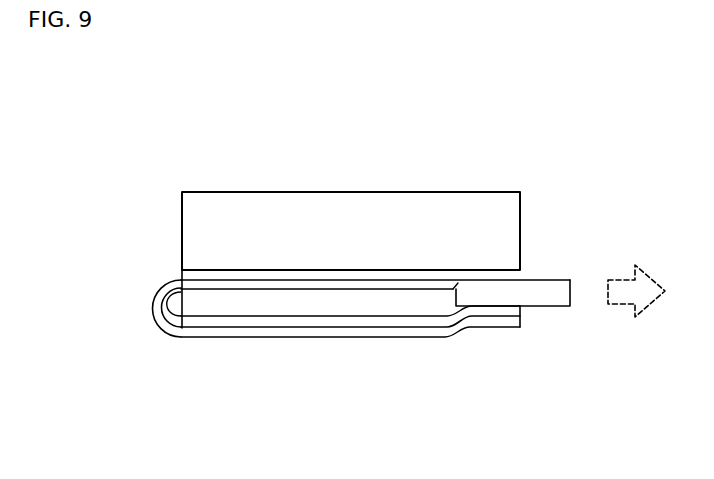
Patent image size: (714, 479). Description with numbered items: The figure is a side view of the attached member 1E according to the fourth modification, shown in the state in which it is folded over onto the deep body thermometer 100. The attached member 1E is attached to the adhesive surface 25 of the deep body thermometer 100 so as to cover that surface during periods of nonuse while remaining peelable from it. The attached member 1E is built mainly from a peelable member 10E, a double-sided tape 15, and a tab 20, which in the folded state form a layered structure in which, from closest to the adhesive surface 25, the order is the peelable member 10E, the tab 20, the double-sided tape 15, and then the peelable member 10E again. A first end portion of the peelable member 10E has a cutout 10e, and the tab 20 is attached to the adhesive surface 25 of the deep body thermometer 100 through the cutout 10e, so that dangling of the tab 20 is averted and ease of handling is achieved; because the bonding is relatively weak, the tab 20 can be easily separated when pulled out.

The deep body thermometer 100 is at (363, 205).
The adhesive surface 25 is at (238, 281).
The attached member 1E is at (141, 289).
The peelable member 10E is at (321, 338).
The double-sided tape 15 is at (403, 324).
The tab 20 is at (477, 310).
The cutout 10e is at (454, 288).